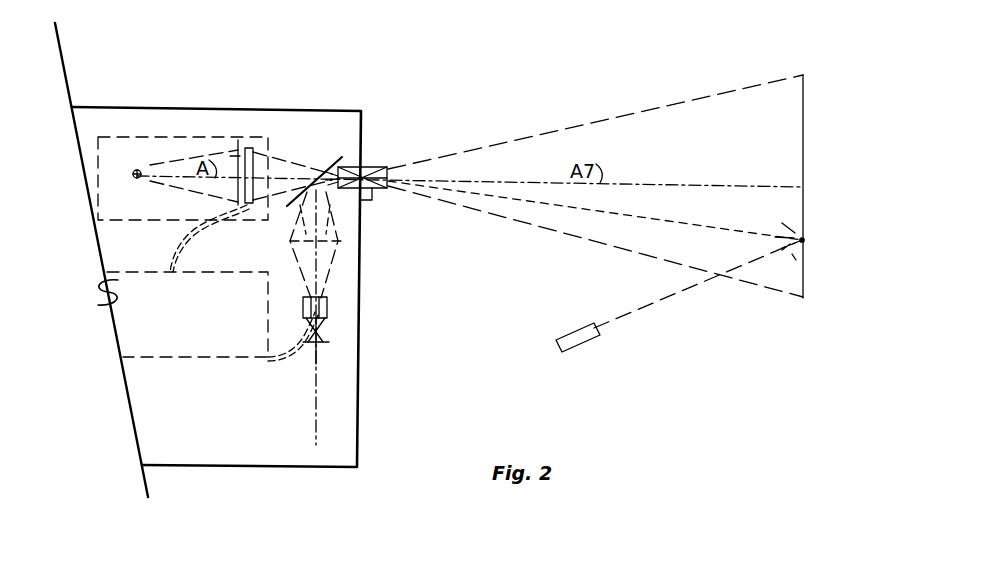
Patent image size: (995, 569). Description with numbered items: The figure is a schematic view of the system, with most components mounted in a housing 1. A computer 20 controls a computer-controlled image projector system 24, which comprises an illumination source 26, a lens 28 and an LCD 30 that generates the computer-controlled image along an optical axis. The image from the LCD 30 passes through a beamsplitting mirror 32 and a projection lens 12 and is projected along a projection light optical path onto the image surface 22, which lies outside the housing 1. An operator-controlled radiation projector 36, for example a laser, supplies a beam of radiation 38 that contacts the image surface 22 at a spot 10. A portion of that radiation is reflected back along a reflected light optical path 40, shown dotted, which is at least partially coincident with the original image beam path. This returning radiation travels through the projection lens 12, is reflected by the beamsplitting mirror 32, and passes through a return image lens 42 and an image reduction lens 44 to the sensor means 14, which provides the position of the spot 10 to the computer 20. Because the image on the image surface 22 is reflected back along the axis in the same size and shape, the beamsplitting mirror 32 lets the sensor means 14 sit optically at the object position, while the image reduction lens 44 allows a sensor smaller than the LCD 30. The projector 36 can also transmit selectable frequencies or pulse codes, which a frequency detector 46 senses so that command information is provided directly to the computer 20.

The housing 1 is at (125, 106).
The spot 10 is at (804, 240).
The projection lens 12 is at (378, 158).
The sensor means 14 is at (328, 346).
The computer 20 is at (212, 283).
The image surface 22 is at (803, 75).
The computer-controlled image projector system 24 is at (253, 136).
The illumination source 26 is at (142, 162).
The lens 28 is at (237, 156).
The LCD 30 is at (250, 152).
The beamsplitting mirror 32 is at (335, 150).
The operator-controlled radiation projector 36 is at (586, 343).
The beam of radiation 38 is at (680, 298).
The reflected light optical path 40 is at (694, 228).
The return image lens 42 is at (348, 247).
The image reduction lens 44 is at (333, 312).
The frequency detector 46 is at (376, 196).